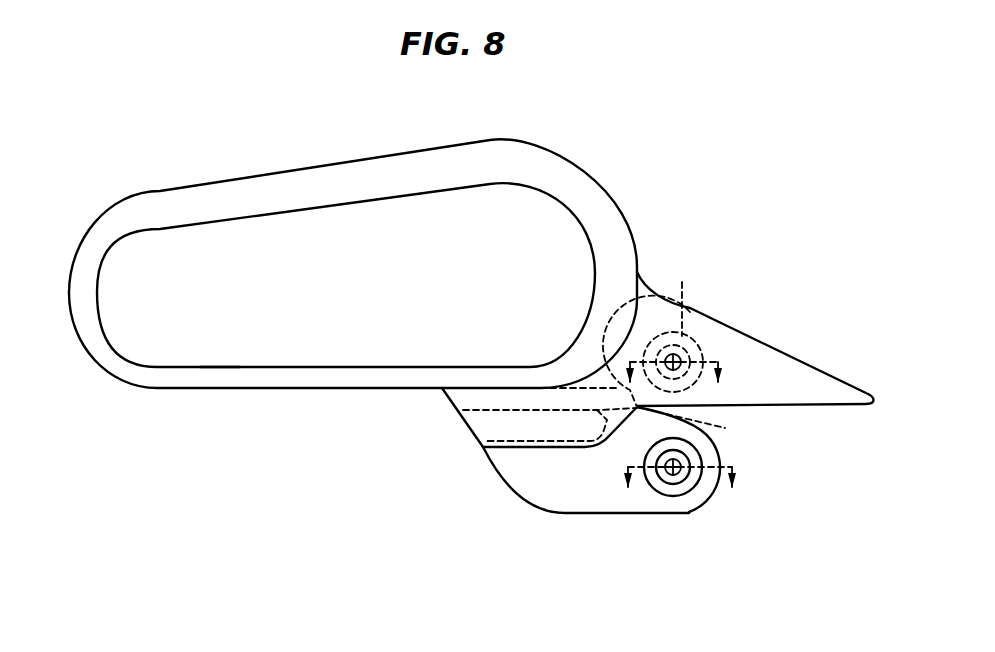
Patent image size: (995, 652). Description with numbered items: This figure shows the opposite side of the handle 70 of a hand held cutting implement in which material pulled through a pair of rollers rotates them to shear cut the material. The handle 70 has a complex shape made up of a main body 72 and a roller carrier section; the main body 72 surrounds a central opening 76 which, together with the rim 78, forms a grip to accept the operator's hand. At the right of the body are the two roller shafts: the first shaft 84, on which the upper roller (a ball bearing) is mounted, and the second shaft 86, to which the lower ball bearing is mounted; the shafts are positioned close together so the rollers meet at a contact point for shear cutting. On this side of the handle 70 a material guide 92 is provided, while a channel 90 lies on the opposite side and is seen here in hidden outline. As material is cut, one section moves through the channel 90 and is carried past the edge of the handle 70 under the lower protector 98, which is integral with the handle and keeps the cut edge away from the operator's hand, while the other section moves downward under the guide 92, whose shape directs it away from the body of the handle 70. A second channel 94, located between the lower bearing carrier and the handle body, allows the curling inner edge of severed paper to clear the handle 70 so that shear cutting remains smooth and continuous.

The handle 70 is at (297, 150).
The main body 72 is at (626, 178).
The central opening 76 is at (346, 275).
The rim 78 is at (80, 307).
The first shaft 84 is at (682, 282).
The second shaft 86 is at (690, 492).
The channel 90 is at (480, 399).
The material guide 92 is at (520, 447).
The second channel 94 is at (697, 424).
The lower protector 98 is at (187, 377).